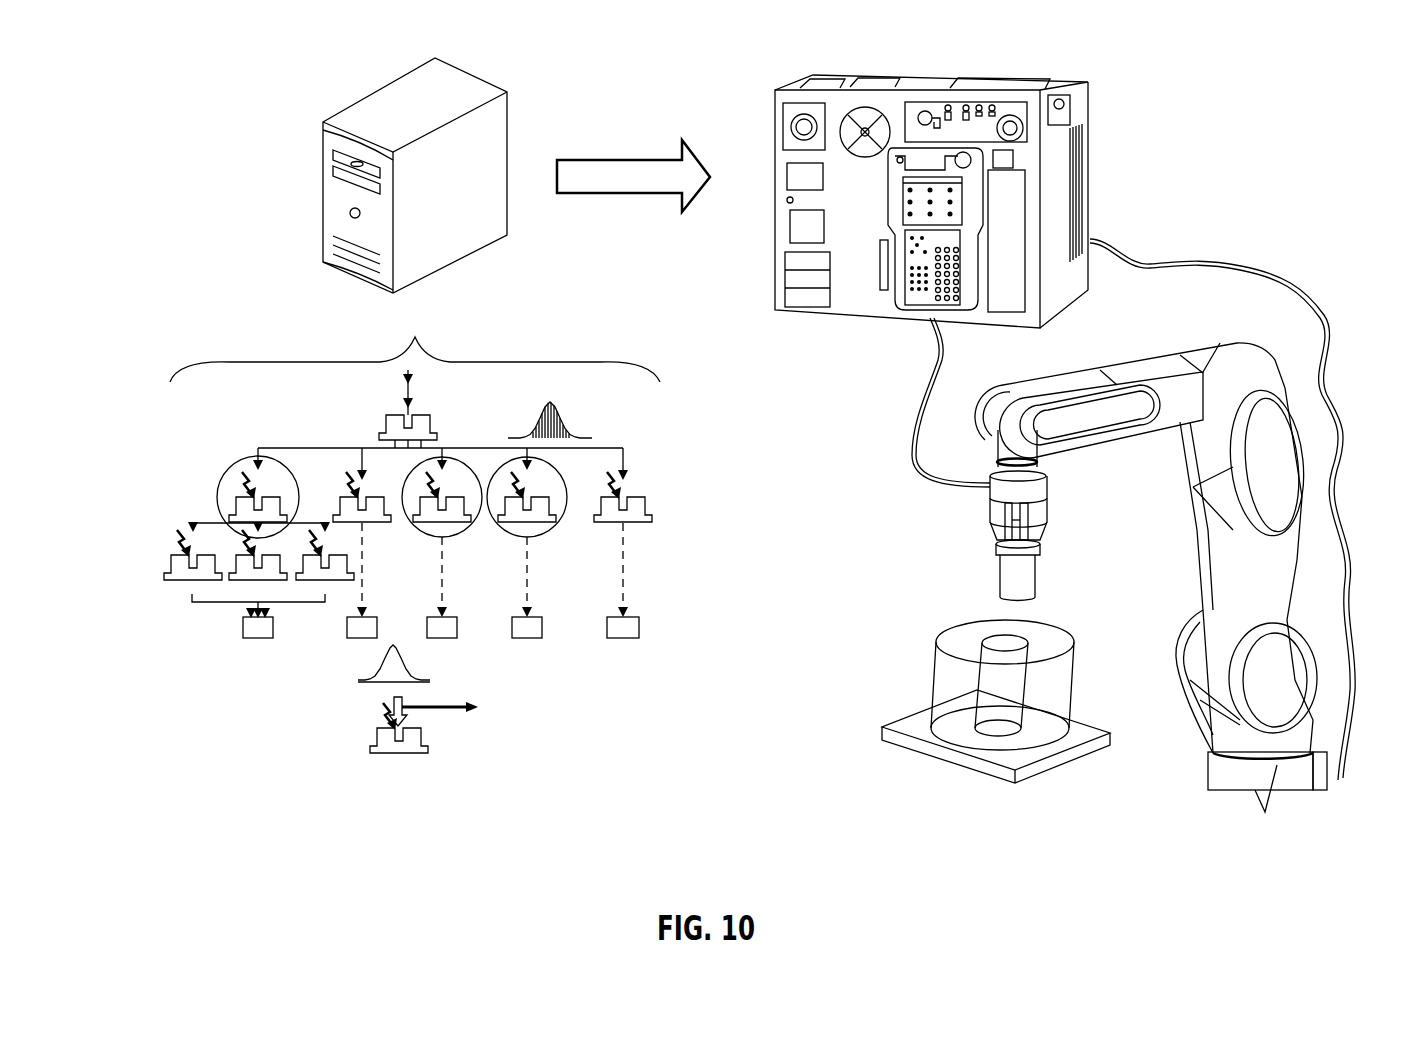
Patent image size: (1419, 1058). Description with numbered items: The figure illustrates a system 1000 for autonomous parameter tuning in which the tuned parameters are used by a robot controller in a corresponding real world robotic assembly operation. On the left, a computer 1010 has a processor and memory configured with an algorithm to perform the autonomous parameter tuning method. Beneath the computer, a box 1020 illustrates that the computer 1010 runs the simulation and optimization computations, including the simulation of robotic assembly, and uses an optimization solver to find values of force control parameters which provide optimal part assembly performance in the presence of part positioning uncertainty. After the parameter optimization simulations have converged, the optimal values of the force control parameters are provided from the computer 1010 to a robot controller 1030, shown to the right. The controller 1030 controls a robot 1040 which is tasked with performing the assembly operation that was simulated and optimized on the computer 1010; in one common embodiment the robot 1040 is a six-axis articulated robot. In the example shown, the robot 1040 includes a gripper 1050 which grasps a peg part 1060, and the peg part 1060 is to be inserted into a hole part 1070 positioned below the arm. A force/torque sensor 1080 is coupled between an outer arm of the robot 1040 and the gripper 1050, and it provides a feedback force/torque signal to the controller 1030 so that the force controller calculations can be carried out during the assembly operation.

The system 1000 is at (220, 104).
The computer 1010 is at (322, 181).
The box 1020 is at (222, 747).
The robot controller 1030 is at (1095, 103).
The robot 1040 is at (1236, 810).
The gripper 1050 is at (1048, 520).
The peg part 1060 is at (1037, 575).
The hole part 1070 is at (1075, 685).
The force/torque sensor 1080 is at (1047, 485).